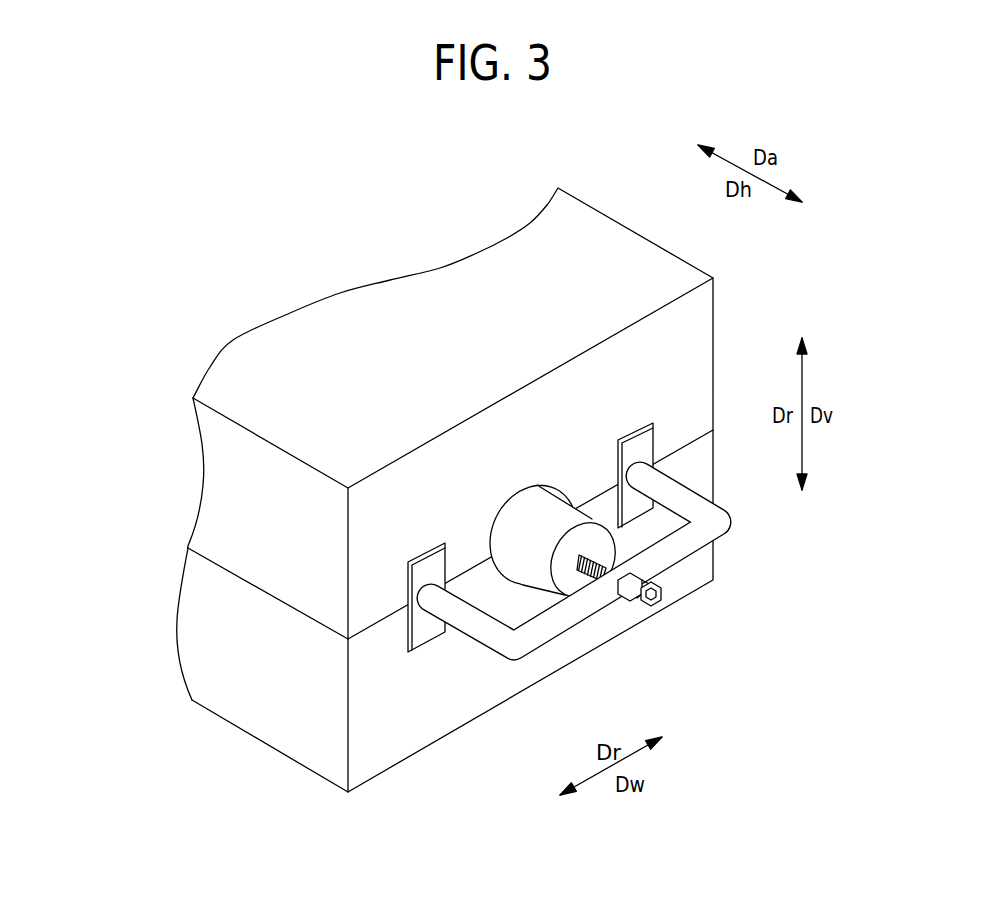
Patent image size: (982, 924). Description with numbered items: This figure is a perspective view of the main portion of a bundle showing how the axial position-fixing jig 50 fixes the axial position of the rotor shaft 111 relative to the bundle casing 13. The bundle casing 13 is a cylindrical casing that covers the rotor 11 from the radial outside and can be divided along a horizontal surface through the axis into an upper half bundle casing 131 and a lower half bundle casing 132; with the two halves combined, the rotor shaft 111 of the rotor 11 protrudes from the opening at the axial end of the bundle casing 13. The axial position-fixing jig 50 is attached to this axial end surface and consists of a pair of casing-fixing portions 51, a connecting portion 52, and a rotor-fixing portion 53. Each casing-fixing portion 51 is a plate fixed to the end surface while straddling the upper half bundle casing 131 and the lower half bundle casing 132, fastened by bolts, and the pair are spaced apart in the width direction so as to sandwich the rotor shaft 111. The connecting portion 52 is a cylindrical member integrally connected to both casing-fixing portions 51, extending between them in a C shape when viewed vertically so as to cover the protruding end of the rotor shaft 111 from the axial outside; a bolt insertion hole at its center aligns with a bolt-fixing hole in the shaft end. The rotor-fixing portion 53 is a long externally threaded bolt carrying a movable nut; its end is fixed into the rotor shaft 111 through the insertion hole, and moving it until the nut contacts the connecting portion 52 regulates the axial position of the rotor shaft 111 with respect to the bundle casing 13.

The rotor 11 is at (516, 391).
The rotor shaft 111 is at (552, 512).
The bundle casing 13 is at (388, 490).
The upper half bundle casing 131 is at (245, 488).
The lower half bundle casing 132 is at (217, 620).
The axial position-fixing jig 50 is at (560, 447).
The casing-fixing portion 51 is at (427, 565).
The connecting portion 52 is at (673, 555).
The rotor-fixing portion 53 is at (657, 604).